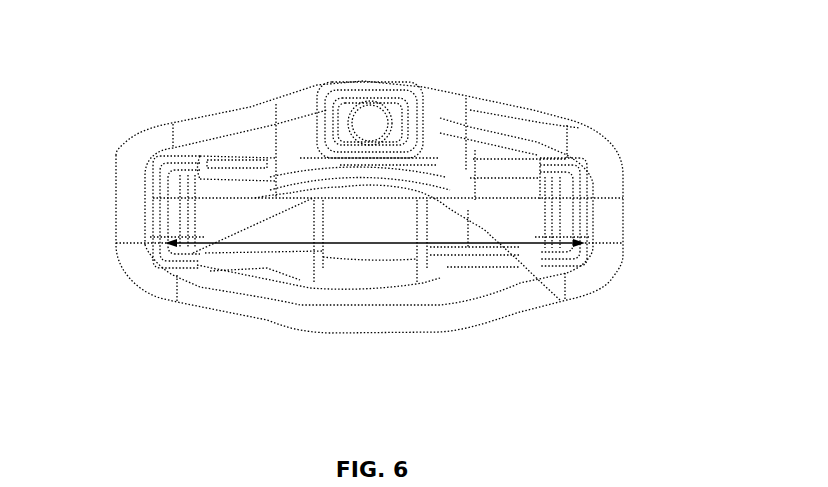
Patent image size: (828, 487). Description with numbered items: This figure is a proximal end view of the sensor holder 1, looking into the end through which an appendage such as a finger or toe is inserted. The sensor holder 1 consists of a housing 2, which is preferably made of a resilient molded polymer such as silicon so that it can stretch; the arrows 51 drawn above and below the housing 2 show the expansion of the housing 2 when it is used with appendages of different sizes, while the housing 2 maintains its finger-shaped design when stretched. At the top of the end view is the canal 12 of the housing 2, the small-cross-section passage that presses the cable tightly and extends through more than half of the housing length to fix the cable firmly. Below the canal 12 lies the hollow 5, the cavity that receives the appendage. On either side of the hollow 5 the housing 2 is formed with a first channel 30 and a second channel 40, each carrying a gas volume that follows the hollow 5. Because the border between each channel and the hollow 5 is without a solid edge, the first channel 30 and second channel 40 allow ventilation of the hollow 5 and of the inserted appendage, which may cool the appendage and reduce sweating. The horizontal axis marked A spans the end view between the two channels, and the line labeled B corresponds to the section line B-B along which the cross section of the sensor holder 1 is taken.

The sensor holder 1 is at (186, 101).
The housing 2 is at (483, 120).
The canal 12 is at (372, 132).
The first channel 30 is at (530, 215).
The second channel 40 is at (217, 218).
The hollow 5 is at (366, 225).
The arrows 51 is at (372, 70).
The axis A is at (487, 243).
The section line B- B is at (488, 198).